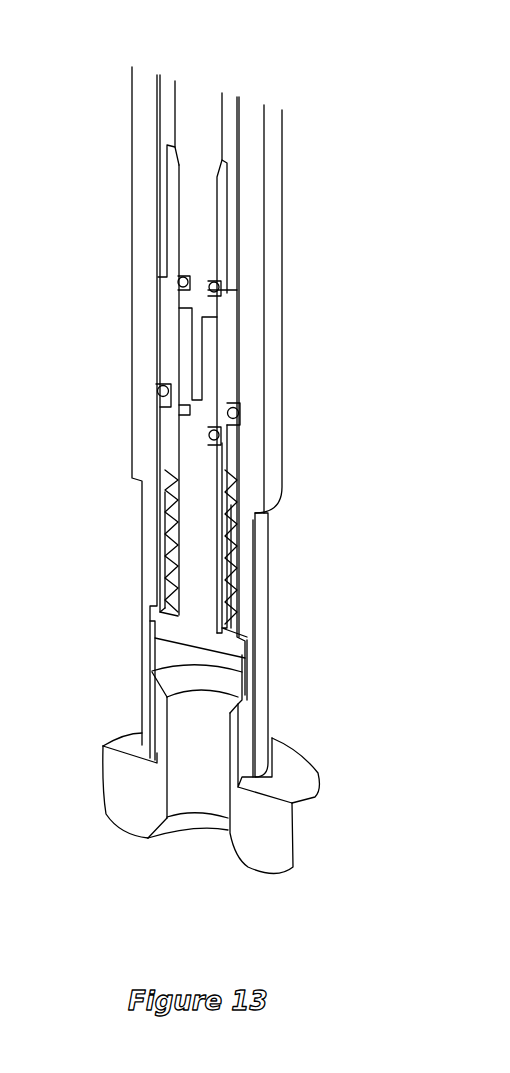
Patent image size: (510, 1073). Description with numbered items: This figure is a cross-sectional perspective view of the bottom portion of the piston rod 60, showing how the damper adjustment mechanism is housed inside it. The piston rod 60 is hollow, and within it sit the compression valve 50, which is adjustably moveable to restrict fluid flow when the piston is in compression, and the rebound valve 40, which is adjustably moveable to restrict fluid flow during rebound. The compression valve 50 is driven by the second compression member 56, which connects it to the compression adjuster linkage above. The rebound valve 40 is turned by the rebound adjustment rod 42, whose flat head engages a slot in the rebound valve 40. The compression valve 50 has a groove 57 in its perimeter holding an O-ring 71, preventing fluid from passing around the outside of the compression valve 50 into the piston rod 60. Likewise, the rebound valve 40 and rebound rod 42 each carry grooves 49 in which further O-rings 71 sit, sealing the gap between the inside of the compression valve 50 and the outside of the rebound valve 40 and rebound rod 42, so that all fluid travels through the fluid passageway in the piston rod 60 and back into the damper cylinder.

The rebound valve 40 is at (197, 457).
The rebound adjustment rod 42 is at (198, 113).
The grooves 49 is at (222, 440).
The compression valve 50 is at (230, 360).
The second compression member 56 is at (230, 137).
The groove 57 is at (238, 292).
The piston rod 60 is at (272, 442).
The O-rings 71 is at (219, 287).